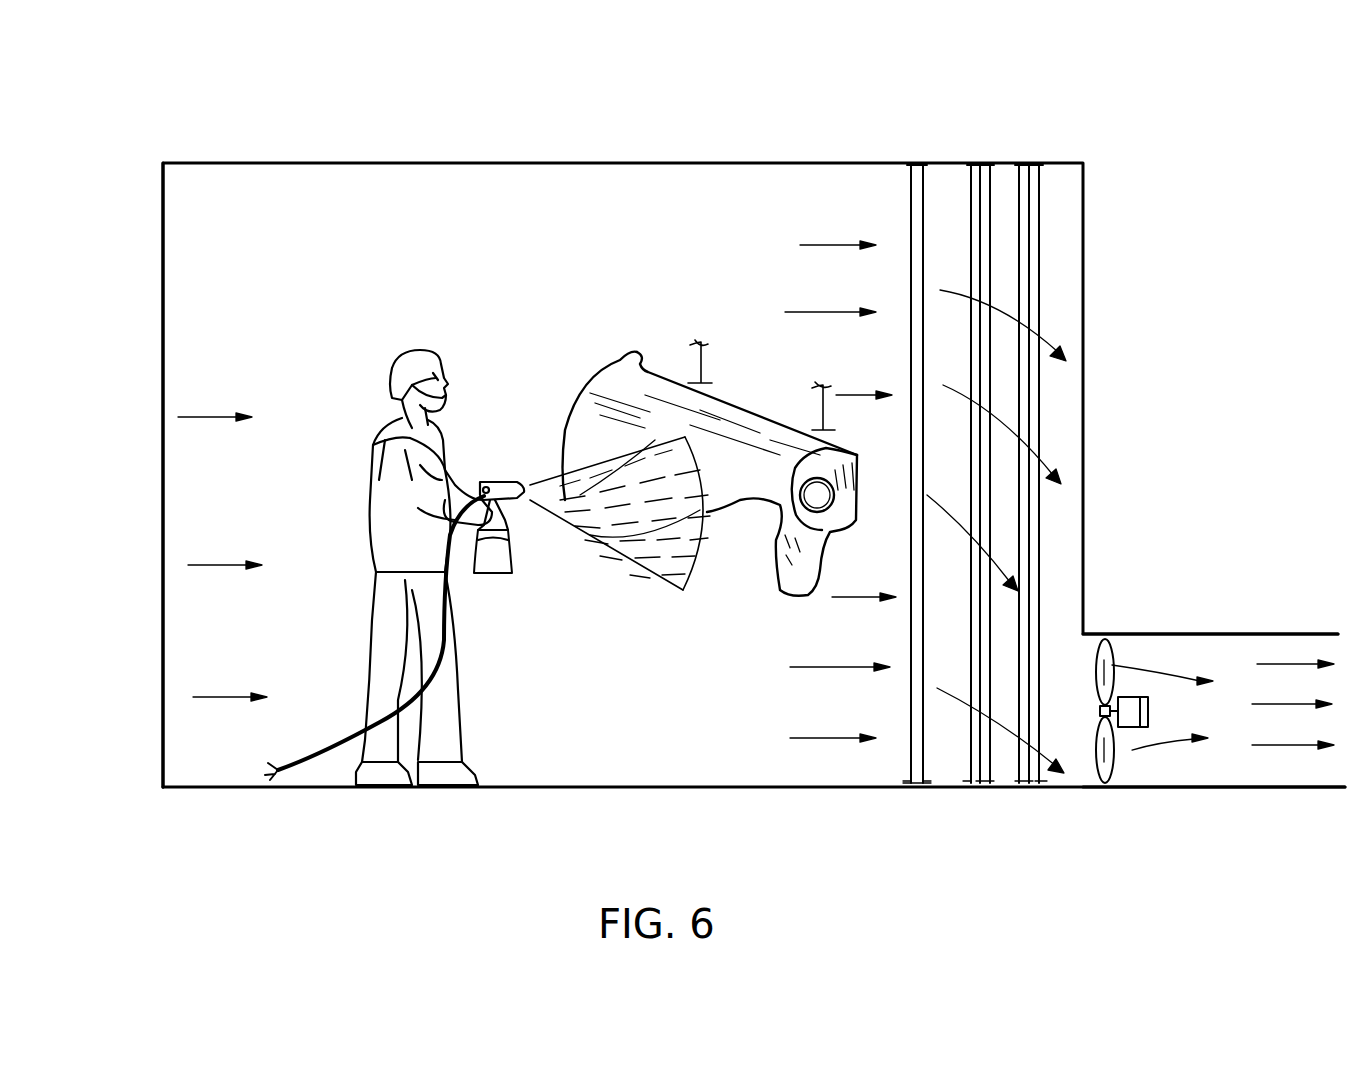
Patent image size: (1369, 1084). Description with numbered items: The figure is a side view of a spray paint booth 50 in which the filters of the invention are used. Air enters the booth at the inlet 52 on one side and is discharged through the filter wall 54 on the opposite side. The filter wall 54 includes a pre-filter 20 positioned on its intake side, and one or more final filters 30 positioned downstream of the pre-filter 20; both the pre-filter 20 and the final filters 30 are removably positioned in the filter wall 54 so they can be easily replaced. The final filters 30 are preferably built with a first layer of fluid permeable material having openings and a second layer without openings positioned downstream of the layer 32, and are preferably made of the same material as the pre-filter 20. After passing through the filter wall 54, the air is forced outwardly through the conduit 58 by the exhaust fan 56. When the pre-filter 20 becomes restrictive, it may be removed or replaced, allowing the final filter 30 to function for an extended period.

The spray paint booth 50 is at (806, 152).
The air inlet 52 is at (163, 502).
The filter wall 54 is at (1047, 424).
The pre-filter 20 is at (923, 243).
The layer of fluid permeable material 32 is at (971, 252).
The final filter 30 is at (990, 285).
The exhaust fan 56 is at (1112, 650).
The conduit 58 is at (1263, 632).